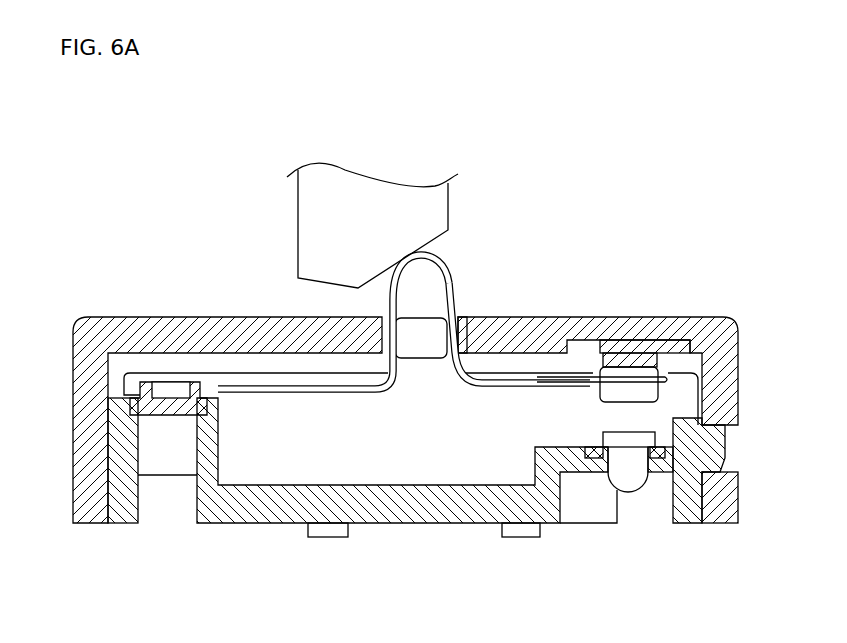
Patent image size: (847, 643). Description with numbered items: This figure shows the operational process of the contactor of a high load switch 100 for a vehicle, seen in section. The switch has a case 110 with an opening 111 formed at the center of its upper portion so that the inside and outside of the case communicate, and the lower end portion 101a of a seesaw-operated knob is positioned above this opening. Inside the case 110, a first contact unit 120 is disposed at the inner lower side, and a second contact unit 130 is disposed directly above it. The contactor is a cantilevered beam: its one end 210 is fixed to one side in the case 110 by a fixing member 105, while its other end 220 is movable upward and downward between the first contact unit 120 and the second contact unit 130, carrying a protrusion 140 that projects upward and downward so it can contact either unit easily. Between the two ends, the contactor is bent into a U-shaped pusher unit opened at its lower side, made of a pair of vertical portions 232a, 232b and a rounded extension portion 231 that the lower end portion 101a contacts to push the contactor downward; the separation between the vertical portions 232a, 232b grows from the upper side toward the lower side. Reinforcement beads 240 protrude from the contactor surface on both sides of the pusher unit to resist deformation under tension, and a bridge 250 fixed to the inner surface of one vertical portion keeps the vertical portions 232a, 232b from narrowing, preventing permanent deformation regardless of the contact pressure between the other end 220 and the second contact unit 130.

The high load switch 100 is at (670, 227).
The lower end portion of knob 101a is at (362, 193).
The fixing member 105 is at (172, 407).
The case 110 is at (718, 338).
The opening 111 is at (465, 312).
The first contact unit 120 is at (630, 478).
The second contact unit 130 is at (635, 363).
The protrusion 140 is at (643, 395).
The one end of contactor 210 is at (125, 393).
The other end of contactor 220 is at (668, 371).
The extension portion 231 is at (432, 257).
The vertical portion 232a is at (387, 303).
The vertical portion 232b is at (452, 280).
The reinforcement bead 240 is at (240, 389).
The bridge 250 is at (432, 348).